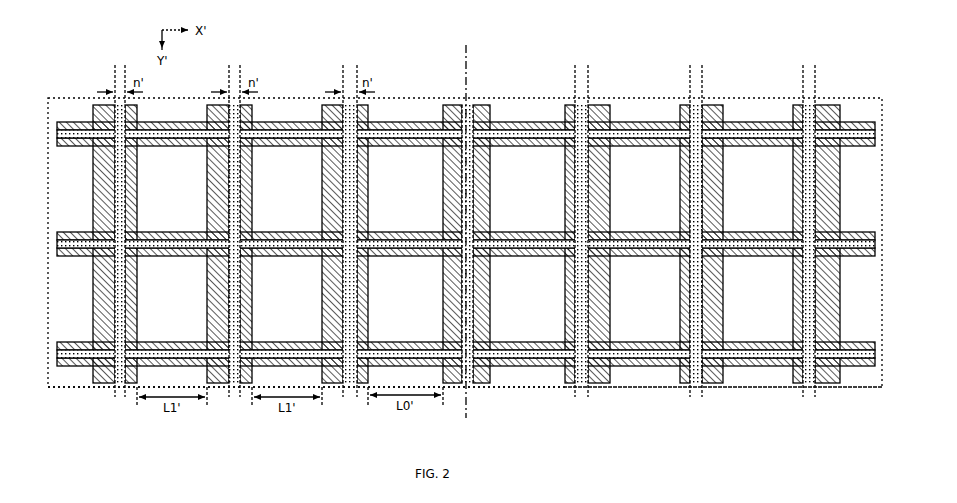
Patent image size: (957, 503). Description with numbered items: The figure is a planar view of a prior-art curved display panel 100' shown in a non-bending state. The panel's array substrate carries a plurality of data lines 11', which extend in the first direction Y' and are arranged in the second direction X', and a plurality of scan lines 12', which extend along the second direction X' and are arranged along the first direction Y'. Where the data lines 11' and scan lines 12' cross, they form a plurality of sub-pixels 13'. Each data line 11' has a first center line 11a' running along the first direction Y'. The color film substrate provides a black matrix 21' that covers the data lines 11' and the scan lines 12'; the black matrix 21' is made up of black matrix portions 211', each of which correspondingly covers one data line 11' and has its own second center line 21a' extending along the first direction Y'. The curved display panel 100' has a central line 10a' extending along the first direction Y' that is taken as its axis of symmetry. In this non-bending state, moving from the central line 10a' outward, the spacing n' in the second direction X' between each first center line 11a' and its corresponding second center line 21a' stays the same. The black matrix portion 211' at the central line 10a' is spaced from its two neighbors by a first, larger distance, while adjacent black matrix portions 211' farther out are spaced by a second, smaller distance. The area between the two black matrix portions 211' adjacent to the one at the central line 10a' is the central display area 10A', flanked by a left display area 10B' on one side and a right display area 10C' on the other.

The curved display panel 100' is at (462, 201).
The second center line 21a' is at (321, 211).
The first center line 11a' is at (374, 218).
The central line 10a' is at (493, 228).
The scan line 12' is at (609, 212).
The sub-pixel 13' is at (645, 136).
The data line 11' is at (692, 219).
The black matrix portion 211' is at (830, 212).
The black matrix 21' is at (466, 93).
The left display area 10B' is at (208, 407).
The central display area 10A' is at (467, 407).
The right display area 10C' is at (723, 407).